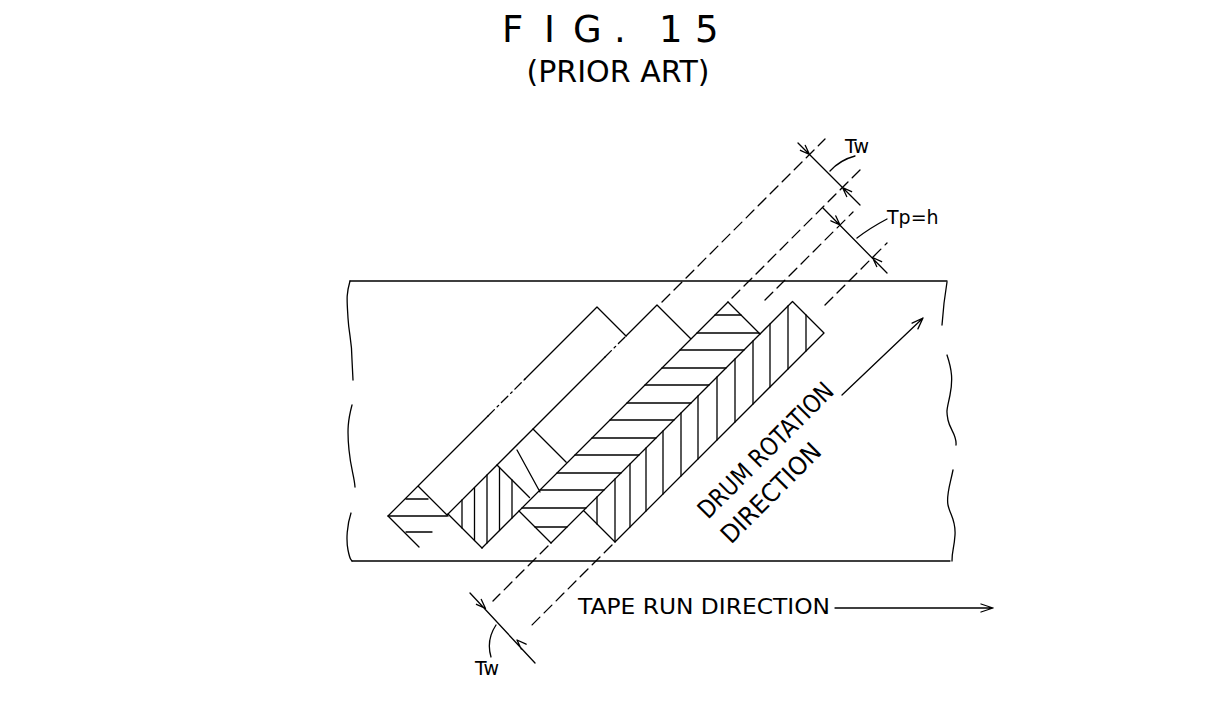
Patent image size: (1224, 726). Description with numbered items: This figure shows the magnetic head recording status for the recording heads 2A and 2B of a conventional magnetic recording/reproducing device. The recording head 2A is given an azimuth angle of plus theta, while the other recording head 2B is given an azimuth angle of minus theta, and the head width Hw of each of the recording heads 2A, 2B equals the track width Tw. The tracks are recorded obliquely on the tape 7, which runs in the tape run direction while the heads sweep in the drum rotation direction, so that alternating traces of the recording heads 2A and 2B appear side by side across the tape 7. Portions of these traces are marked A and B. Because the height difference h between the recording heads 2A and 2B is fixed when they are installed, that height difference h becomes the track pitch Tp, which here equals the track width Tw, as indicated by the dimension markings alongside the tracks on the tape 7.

The magnetic tape 7 is at (347, 398).
The recording head 2A is at (512, 465).
The recording head 2B is at (445, 478).
The track region A (head trace portion) A is at (605, 530).
The track region B (head trace portion) B is at (730, 310).